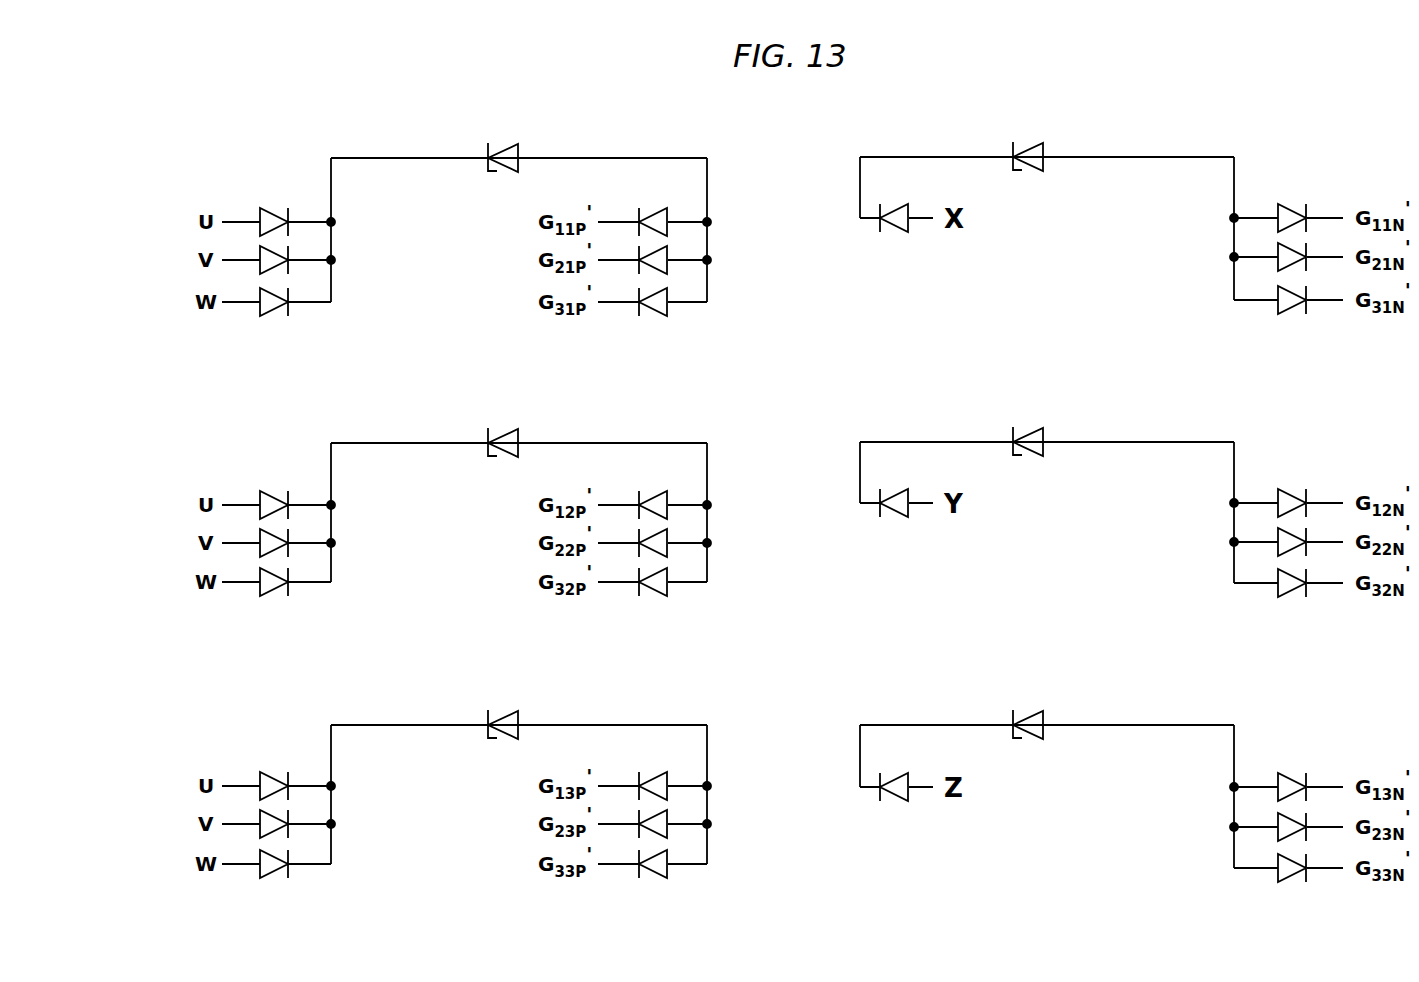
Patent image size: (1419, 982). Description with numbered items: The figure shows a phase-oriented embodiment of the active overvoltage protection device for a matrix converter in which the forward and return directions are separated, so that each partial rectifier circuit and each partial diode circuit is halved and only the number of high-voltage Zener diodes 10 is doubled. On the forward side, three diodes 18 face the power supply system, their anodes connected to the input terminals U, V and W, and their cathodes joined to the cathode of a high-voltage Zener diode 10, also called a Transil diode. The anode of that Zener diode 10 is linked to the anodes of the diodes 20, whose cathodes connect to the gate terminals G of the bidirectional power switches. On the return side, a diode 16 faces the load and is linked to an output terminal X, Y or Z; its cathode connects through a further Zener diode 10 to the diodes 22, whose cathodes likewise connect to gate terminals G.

The high-voltage Zener diode 10 is at (503, 144).
The diode 16 is at (896, 485).
The diode 18 is at (278, 524).
The diode 20 is at (654, 523).
The diode 22 is at (1286, 526).